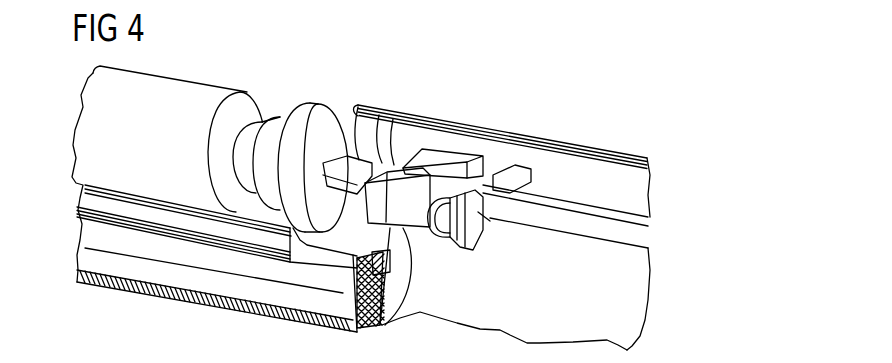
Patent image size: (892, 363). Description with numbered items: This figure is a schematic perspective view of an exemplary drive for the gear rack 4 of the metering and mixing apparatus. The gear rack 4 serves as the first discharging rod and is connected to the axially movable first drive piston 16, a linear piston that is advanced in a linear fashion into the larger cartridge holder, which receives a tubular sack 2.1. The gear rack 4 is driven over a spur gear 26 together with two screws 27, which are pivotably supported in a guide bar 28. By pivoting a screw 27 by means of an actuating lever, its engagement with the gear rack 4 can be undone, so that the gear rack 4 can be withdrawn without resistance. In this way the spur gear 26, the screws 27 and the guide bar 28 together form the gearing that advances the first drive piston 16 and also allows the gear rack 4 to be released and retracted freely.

The tubular sack 2.1 is at (183, 94).
The first drive piston 16 is at (343, 150).
The screw 27 is at (447, 158).
The guide bar 28 is at (513, 163).
The spur gear 26 is at (450, 266).
The gear rack 4 is at (530, 241).